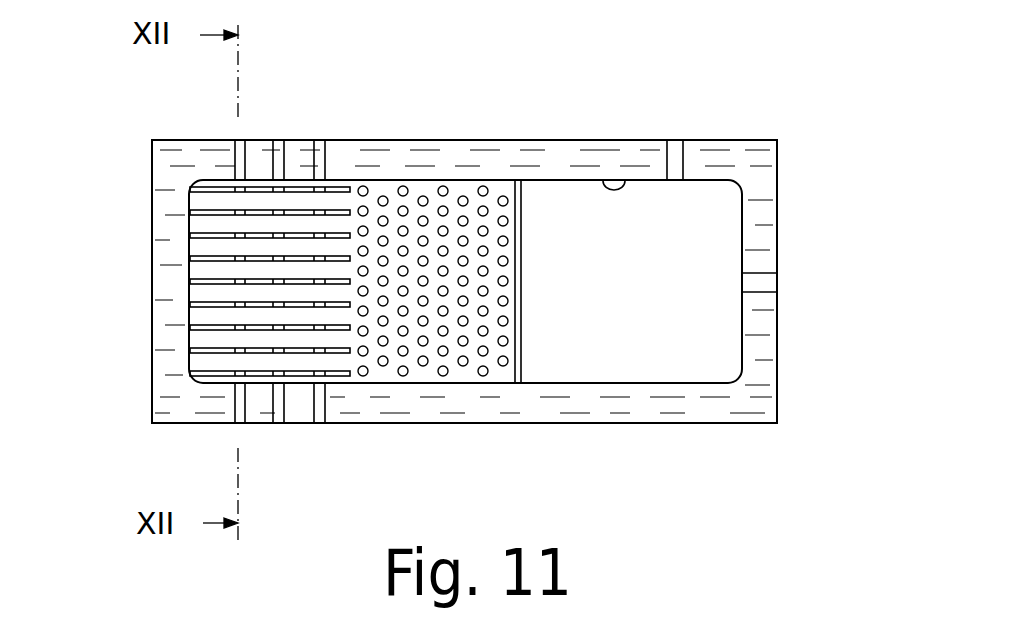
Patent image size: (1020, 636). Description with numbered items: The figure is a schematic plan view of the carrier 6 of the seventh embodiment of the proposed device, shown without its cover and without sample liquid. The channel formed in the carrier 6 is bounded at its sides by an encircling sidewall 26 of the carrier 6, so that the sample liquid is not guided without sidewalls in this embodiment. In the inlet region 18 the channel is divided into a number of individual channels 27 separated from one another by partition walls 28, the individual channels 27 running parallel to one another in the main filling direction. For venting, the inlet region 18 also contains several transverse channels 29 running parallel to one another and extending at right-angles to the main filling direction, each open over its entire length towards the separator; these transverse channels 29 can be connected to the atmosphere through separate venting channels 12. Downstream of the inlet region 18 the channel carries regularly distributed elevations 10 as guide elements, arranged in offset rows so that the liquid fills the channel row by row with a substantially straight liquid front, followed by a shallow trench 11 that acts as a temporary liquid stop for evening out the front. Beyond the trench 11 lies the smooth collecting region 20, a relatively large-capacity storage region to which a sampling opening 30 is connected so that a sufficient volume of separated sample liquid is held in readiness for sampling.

The carrier 6 is at (543, 160).
The elevations 10 is at (403, 356).
The trench 11 is at (521, 330).
The venting channels 12 is at (779, 281).
The inlet region 18 is at (350, 443).
The collecting region 20 is at (650, 298).
The sidewall 26 is at (618, 182).
The individual channels 27 is at (193, 290).
The partition walls 28 is at (197, 347).
The transverse channels 29 is at (342, 192).
The sampling opening 30 is at (684, 158).